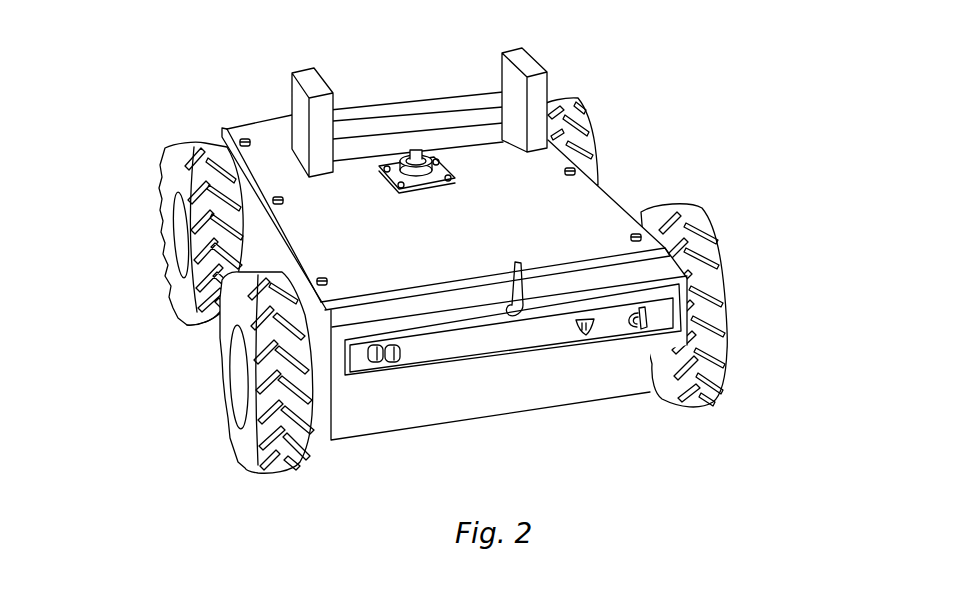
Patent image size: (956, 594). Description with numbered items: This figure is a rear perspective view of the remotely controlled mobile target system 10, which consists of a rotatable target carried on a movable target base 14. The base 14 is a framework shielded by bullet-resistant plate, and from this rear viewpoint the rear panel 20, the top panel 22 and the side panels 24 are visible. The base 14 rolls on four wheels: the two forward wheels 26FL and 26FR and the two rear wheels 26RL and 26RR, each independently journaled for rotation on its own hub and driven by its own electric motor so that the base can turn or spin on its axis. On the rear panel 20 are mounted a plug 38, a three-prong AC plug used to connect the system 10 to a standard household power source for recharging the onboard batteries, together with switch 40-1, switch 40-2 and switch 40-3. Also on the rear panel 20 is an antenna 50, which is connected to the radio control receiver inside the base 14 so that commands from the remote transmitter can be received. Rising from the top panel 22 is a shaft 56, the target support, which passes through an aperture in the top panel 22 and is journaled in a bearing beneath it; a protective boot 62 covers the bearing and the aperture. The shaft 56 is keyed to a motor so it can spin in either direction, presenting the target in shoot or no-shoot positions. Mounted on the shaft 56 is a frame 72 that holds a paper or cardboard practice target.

The remotely controlled mobile target system 10 is at (674, 111).
The movable target base 14 is at (606, 189).
The rear panel 20 is at (507, 397).
The top panel 22 is at (458, 222).
The side panels 24 is at (213, 320).
The front left wheel 26FL is at (168, 288).
The front right wheel 26FR is at (572, 102).
The rear left wheel 26RL is at (230, 433).
The rear right wheel 26RR is at (702, 209).
The plug 38 is at (583, 335).
The switch 40-1 is at (643, 329).
The switch 40-2 is at (375, 362).
The switch 40-3 is at (393, 362).
The antenna 50 is at (520, 263).
The shaft 56 is at (416, 161).
The protective boot 62 is at (450, 178).
The frame 72 is at (438, 97).